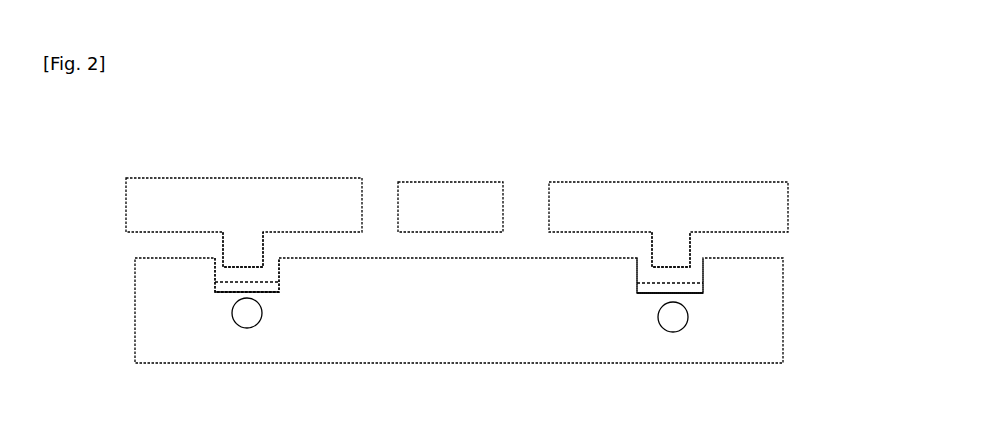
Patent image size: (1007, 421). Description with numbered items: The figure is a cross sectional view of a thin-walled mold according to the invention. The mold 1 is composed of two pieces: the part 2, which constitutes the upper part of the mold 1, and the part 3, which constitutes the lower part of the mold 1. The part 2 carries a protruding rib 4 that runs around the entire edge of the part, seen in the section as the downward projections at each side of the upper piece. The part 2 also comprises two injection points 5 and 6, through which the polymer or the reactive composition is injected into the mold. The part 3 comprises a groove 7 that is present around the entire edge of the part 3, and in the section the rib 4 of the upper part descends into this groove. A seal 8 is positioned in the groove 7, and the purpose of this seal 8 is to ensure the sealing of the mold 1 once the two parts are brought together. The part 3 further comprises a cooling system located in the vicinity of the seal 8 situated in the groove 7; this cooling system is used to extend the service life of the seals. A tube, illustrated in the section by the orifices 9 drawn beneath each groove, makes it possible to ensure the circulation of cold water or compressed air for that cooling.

The mold 1 is at (112, 153).
The part 2 is at (315, 178).
The part 3 is at (786, 349).
The protruding rib 4 is at (250, 267).
The injection point 5 is at (381, 192).
The injection point 6 is at (526, 195).
The groove 7 is at (214, 272).
The seal 8 is at (230, 291).
The orifices 9 is at (262, 321).